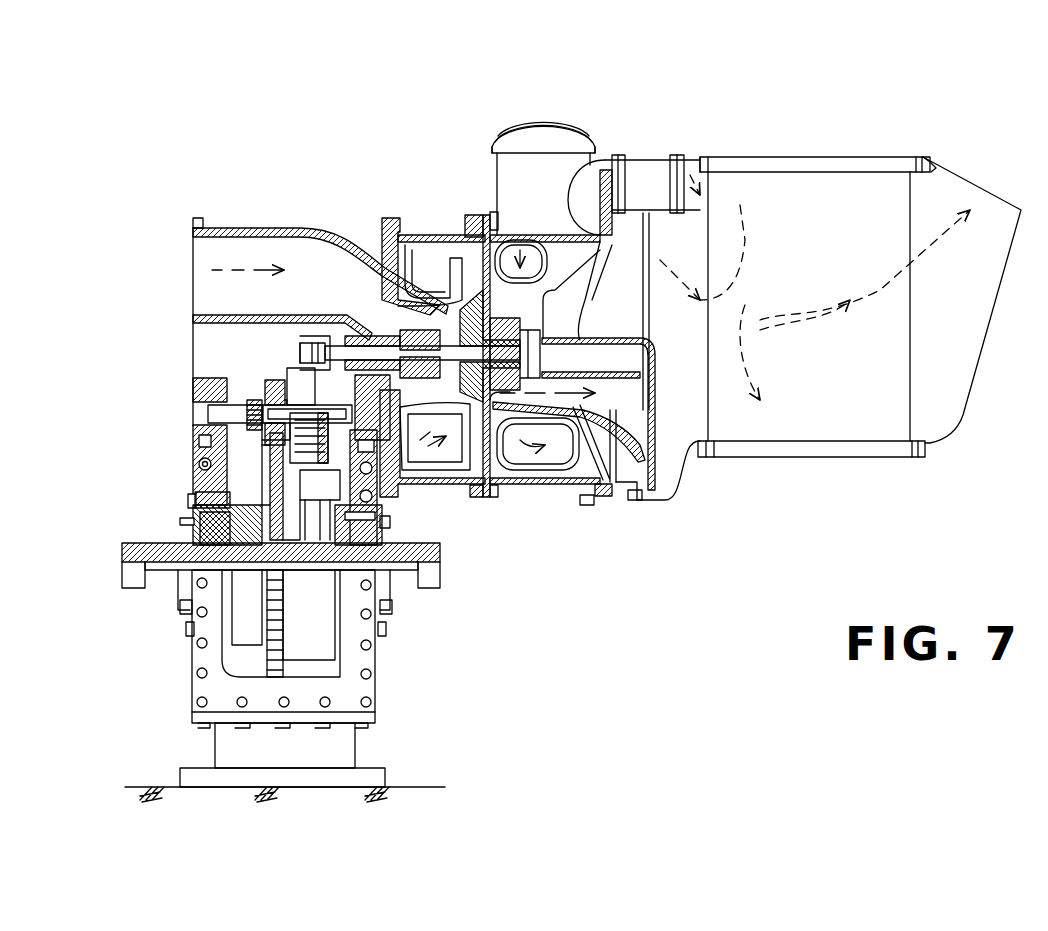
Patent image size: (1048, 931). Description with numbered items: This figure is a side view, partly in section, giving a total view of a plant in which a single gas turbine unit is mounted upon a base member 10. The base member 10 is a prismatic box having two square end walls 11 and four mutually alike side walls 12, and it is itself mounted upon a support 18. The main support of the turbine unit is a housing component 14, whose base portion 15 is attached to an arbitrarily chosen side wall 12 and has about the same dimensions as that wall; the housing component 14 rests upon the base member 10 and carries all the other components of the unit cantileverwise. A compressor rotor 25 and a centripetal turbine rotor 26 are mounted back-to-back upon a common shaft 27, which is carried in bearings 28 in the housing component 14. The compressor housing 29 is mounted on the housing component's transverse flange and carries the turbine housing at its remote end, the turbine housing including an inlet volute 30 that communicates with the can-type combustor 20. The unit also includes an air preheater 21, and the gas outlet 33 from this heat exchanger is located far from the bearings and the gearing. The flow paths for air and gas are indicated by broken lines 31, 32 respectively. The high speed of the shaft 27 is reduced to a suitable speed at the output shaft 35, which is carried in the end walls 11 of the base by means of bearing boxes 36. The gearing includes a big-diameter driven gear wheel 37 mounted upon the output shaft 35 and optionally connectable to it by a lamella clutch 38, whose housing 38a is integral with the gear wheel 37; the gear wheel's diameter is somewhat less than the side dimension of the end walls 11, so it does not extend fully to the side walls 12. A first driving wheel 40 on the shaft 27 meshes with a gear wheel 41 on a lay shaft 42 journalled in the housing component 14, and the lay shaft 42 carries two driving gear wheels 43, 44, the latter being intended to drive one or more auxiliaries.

The base member 10 is at (380, 686).
The end wall 11 is at (203, 443).
The side wall 12 is at (210, 687).
The housing component 14 is at (246, 226).
The base portion 15 is at (200, 489).
The support 18 is at (362, 781).
The combustor 20 is at (543, 153).
The air preheater 21 is at (778, 190).
The compressor rotor 25 is at (457, 490).
The centripetal turbine rotor 26 is at (537, 462).
The common shaft 27 is at (358, 243).
The bearings 28 is at (308, 244).
The compressor housing 29 is at (442, 240).
The inlet volute 30 is at (584, 482).
The air flow path 31 is at (733, 388).
The gas flow path 32 is at (868, 310).
The gas outlet 33 is at (963, 178).
The output shaft 35 is at (145, 580).
The bearing boxes 36 is at (200, 530).
The driven gear wheel 37 is at (268, 640).
The lamella clutch 38 is at (383, 507).
The clutch housing 38a is at (302, 629).
The first driving wheel 40 is at (290, 294).
The gear wheel 41 is at (255, 348).
The lay shaft 42 is at (257, 397).
The driving gear wheel 43 is at (265, 358).
The driving gear wheel 44 is at (207, 443).